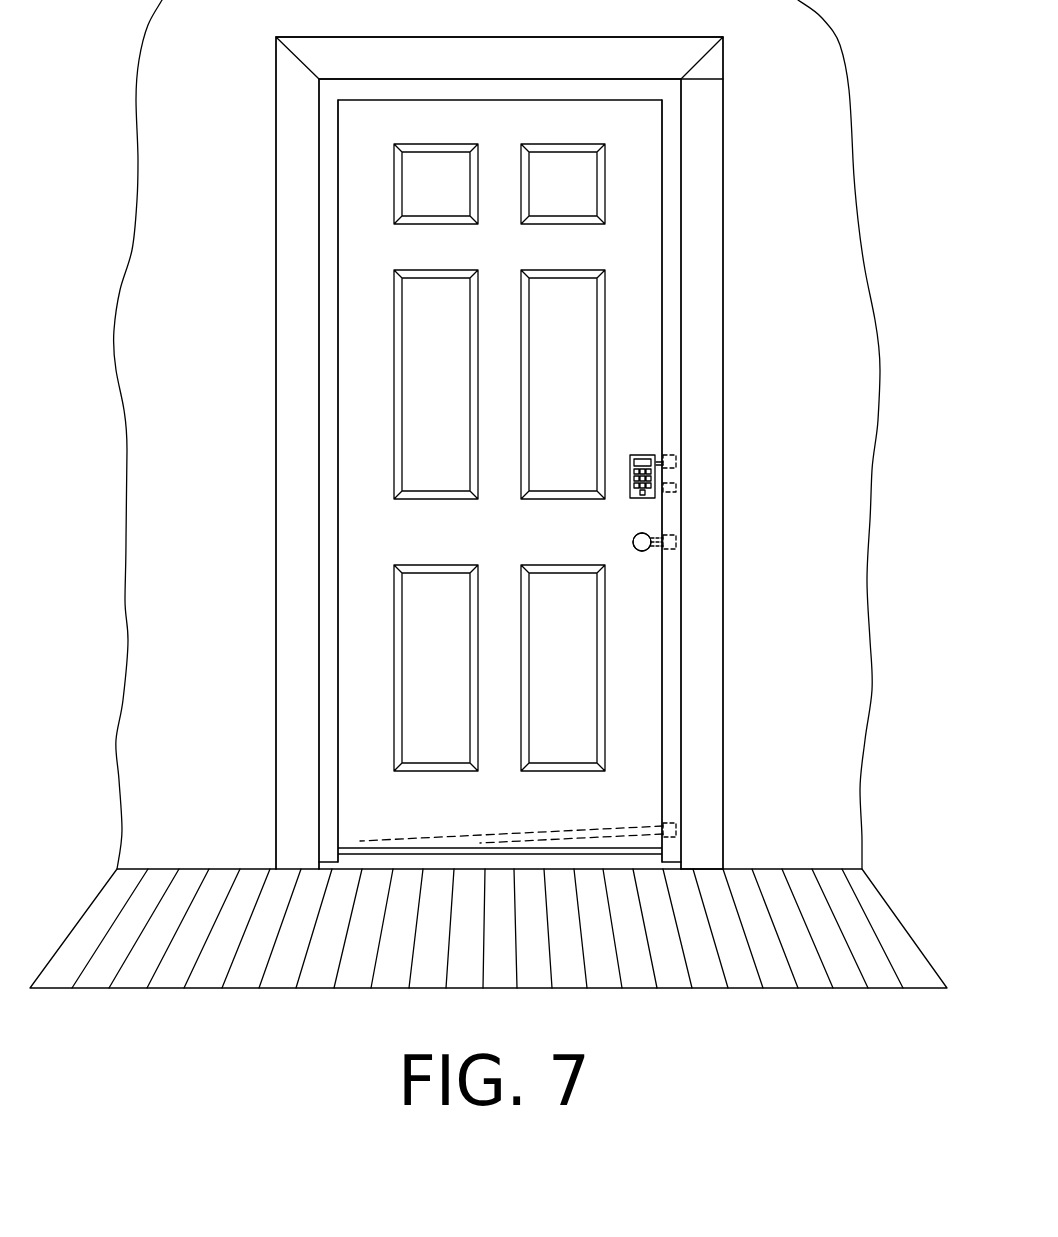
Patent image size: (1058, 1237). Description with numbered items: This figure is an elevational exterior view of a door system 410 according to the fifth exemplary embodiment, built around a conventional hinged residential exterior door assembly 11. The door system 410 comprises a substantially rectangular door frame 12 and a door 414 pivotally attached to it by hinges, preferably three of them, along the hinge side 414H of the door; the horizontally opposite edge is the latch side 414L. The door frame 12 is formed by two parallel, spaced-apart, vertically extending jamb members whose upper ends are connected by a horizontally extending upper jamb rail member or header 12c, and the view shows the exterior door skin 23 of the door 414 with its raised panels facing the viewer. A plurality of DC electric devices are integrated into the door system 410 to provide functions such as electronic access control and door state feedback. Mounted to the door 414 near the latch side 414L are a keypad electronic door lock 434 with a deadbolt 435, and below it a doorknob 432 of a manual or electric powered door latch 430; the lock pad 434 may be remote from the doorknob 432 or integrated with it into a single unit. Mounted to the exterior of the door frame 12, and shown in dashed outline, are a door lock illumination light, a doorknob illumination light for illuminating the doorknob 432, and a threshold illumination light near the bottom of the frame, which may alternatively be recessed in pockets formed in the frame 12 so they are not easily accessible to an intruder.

The door system 410 is at (777, 284).
The door assembly 11 is at (740, 343).
The door frame 12 is at (690, 745).
The header 12c is at (402, 90).
The exterior door skin 23 is at (625, 126).
The door 414 is at (362, 319).
The hinge side 414H is at (338, 183).
The latch side 414L is at (662, 183).
The keypad electronic door lock 434 is at (641, 440).
The deadbolt 435 is at (676, 487).
The doorknob 432 is at (633, 542).
The door latch 430 is at (653, 580).